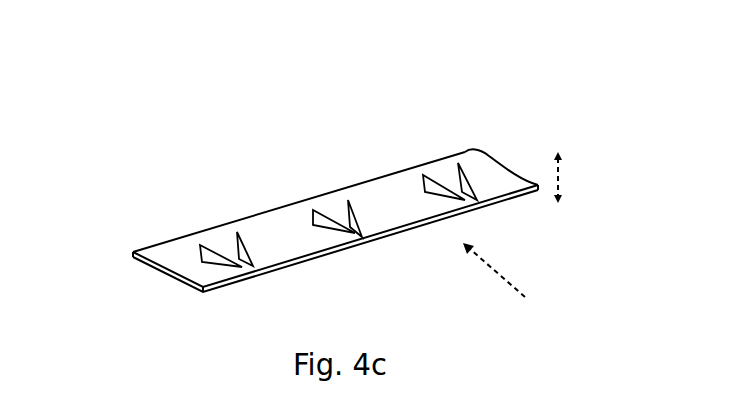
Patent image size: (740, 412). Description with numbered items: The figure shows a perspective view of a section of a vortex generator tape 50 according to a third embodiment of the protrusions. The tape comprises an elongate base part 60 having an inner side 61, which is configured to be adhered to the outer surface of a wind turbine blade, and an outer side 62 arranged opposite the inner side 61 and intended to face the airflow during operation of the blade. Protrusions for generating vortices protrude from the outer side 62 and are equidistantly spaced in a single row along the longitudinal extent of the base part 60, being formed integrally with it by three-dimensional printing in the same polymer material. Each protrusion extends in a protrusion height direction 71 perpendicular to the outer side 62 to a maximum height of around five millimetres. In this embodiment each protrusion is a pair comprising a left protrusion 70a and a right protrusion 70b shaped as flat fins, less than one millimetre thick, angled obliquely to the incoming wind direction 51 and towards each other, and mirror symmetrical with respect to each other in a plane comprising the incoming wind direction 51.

The vortex generator tape 50 is at (474, 102).
The incoming wind direction 51 is at (502, 274).
The elongate base part 60 is at (133, 270).
The inner side 61 is at (167, 280).
The outer side 62 is at (150, 248).
The left protrusion 70a is at (220, 270).
The right protrusion 70b is at (237, 232).
The protrusion height direction 71 is at (558, 173).